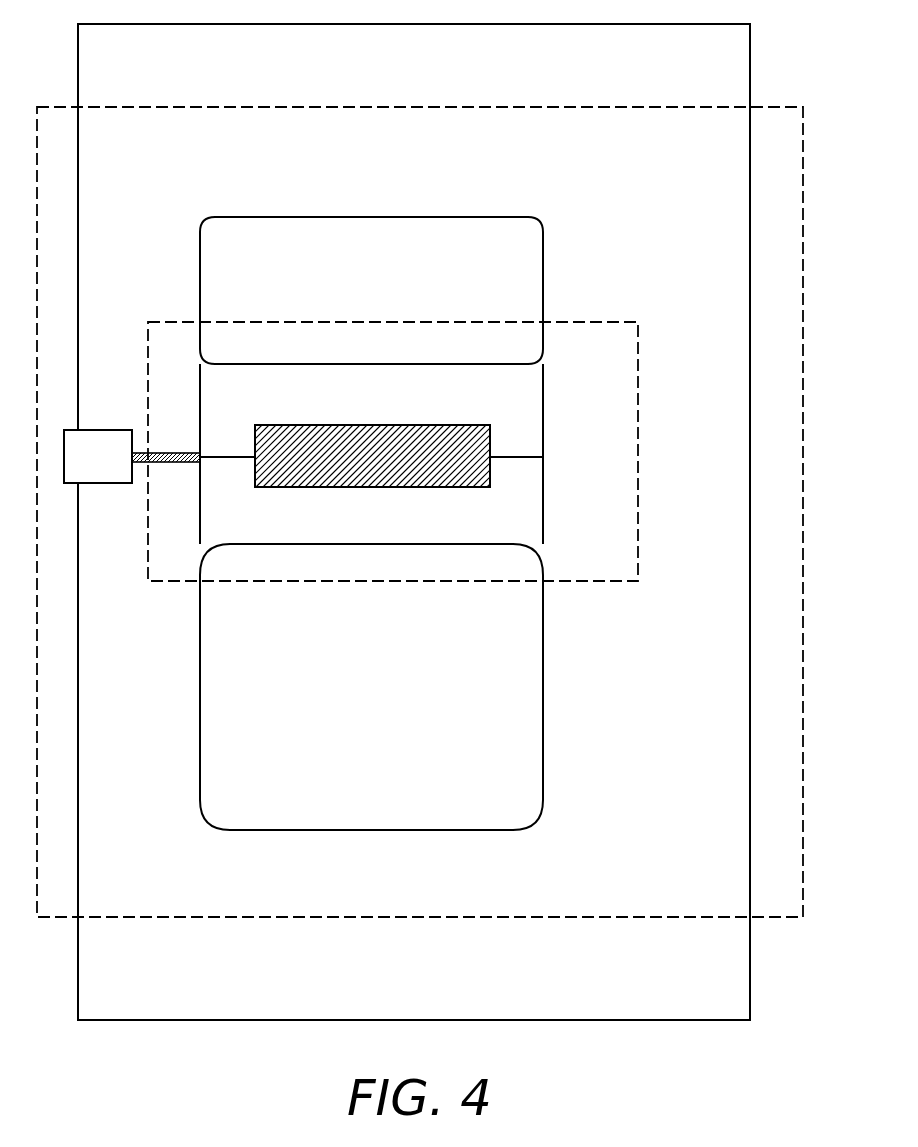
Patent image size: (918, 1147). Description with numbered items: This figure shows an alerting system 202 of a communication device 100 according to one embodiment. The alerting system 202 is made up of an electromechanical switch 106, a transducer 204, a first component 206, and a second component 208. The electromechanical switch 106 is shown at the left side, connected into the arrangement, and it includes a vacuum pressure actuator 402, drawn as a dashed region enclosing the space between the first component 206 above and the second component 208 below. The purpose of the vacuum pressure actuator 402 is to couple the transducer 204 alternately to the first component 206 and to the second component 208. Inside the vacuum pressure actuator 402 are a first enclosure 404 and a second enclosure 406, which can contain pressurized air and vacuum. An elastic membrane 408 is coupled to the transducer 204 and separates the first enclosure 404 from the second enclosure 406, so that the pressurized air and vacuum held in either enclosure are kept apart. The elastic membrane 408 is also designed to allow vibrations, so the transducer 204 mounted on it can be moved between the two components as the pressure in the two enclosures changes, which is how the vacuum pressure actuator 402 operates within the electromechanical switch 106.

The communication device 100 is at (733, 24).
The electromechanical switch 106 is at (110, 430).
The alerting system 202 is at (785, 107).
The transducer 204 is at (472, 425).
The first component 206 is at (543, 268).
The second component 208 is at (543, 690).
The vacuum pressure actuator 402 is at (622, 322).
The first enclosure 404 is at (543, 383).
The second enclosure 406 is at (543, 517).
The elastic membrane 408 is at (226, 452).